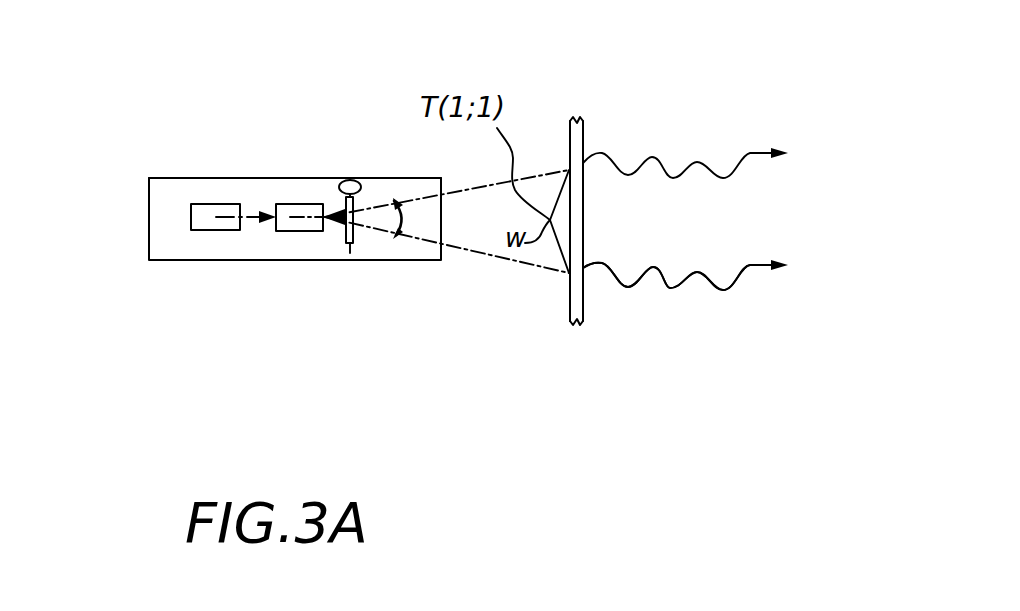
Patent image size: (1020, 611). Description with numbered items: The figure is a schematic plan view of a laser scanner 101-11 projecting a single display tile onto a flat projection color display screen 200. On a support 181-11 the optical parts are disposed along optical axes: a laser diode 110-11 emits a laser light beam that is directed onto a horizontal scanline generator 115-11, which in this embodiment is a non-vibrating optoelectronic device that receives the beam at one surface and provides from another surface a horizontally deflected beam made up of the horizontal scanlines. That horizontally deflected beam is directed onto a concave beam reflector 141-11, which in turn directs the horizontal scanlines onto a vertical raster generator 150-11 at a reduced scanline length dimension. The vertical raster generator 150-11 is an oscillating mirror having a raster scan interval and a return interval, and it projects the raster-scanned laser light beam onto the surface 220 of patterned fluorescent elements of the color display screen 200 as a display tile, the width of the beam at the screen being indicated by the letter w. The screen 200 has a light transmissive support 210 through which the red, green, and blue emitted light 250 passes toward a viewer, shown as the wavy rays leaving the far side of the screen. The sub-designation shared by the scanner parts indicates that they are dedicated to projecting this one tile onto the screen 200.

The laser scanner 101-11 is at (286, 158).
The support 181-11 is at (184, 178).
The laser diode 110-11 is at (191, 223).
The horizontal scanline generator 115-11 is at (283, 232).
The vertical raster generator 150-11 is at (352, 244).
The concave beam reflector 141-11 is at (388, 234).
The light transmissive support 210 is at (575, 120).
The surface 220 is at (570, 303).
The emitted light 250 is at (683, 177).
The color display screen 200 is at (712, 320).